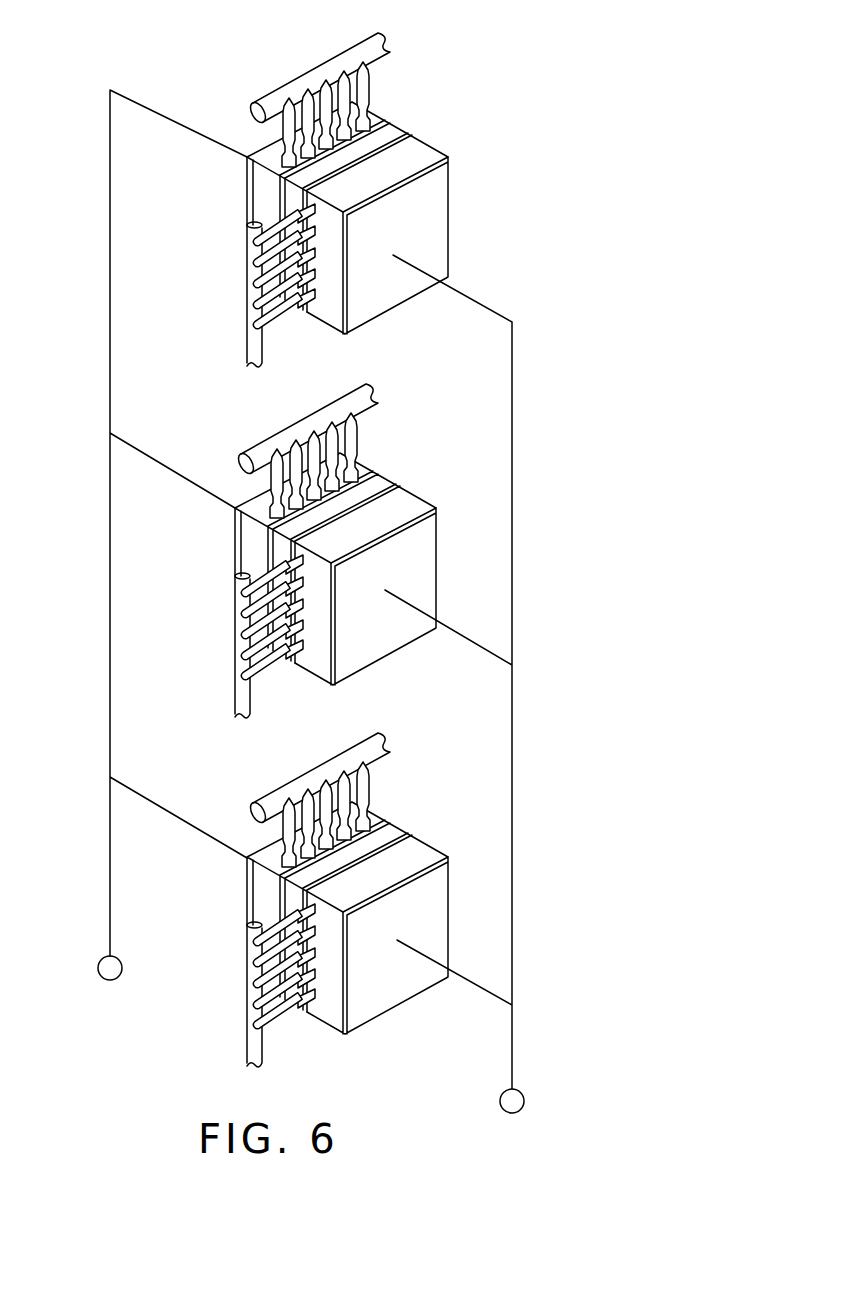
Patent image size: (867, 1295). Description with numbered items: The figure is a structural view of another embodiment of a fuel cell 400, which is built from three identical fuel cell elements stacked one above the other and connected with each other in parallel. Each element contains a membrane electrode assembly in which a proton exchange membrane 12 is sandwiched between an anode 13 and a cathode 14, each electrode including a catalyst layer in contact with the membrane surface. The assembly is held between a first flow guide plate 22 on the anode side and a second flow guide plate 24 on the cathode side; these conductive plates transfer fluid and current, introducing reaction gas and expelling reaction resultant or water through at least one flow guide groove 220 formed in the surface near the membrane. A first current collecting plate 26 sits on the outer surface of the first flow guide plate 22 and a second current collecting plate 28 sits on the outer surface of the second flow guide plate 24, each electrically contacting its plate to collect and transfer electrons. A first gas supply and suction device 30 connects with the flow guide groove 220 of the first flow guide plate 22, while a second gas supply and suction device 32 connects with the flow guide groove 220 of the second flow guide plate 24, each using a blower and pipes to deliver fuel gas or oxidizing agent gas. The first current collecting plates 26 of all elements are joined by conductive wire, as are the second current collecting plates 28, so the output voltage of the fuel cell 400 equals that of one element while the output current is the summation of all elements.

The fuel cell 400 is at (53, 80).
The proton exchange membrane 12 is at (390, 130).
The anode 13 is at (375, 126).
The cathode 14 is at (307, 202).
The first flow guide plate 22 is at (272, 160).
The second flow guide plate 24 is at (410, 148).
The first current collecting plate 26 is at (247, 182).
The second current collecting plate 28 is at (430, 222).
The first gas supply and suction device 30 is at (268, 103).
The second gas supply and suction device 32 is at (254, 288).
The flow guide groove 220 is at (358, 126).